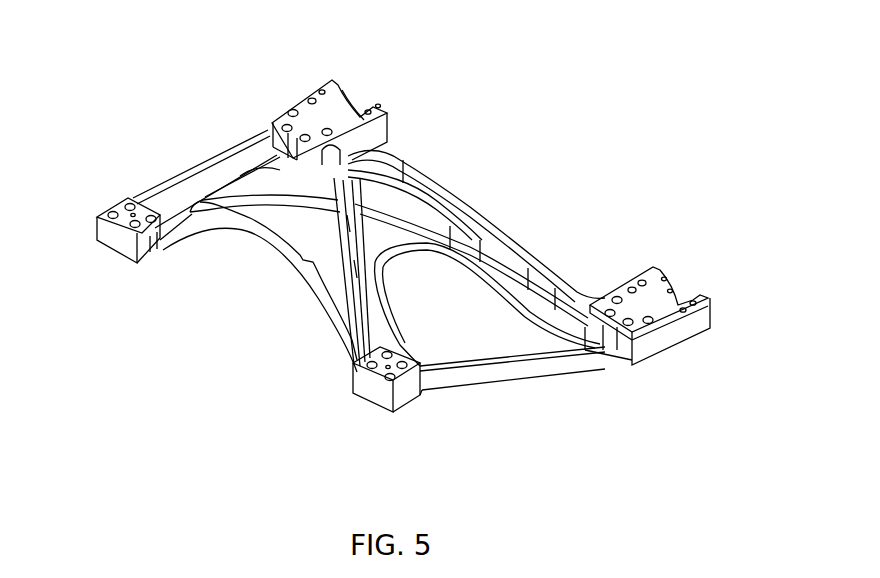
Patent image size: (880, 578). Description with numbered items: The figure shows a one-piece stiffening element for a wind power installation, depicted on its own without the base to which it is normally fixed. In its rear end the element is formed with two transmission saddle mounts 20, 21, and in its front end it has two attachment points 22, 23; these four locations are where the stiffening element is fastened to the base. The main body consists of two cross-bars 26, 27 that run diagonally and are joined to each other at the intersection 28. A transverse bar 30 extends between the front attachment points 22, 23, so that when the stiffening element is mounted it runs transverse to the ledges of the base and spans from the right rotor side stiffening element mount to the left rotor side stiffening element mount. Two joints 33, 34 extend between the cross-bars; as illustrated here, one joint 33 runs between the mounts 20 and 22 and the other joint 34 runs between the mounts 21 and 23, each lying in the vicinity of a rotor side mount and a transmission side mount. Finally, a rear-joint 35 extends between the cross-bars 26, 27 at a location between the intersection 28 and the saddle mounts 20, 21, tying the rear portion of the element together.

The transmission saddle mount 20 is at (657, 293).
The transmission saddle mount 21 is at (338, 110).
The attachment point 22 is at (375, 385).
The attachment point 23 is at (98, 238).
The cross-bar 26 is at (453, 237).
The cross-bar 27 is at (353, 282).
The intersection 28 is at (310, 208).
The transverse bar 30 is at (203, 222).
The joint 33 is at (523, 368).
The joint 34 is at (218, 168).
The rear-joint 35 is at (401, 160).